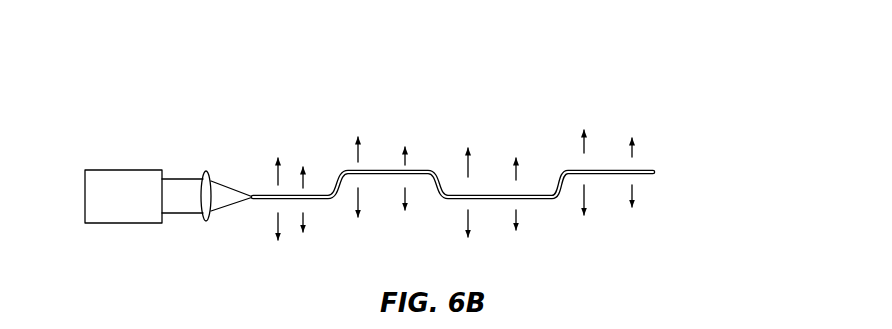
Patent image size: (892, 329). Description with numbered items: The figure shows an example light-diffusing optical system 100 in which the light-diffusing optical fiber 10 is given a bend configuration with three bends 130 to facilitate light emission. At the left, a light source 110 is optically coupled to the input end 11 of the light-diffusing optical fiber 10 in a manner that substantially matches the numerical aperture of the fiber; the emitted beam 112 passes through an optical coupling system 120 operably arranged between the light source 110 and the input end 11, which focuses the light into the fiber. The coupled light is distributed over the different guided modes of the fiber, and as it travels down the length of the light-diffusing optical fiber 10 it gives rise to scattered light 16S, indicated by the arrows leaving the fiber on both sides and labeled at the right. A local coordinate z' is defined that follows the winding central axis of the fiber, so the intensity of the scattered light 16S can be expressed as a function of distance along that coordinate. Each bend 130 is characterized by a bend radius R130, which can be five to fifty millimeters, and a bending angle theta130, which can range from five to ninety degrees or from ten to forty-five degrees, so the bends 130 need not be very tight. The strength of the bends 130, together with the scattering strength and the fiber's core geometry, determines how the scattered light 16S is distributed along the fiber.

The light-diffusing optical system 100 is at (135, 102).
The light source 110 is at (138, 205).
The laser beam 112 is at (180, 216).
The optical coupling system 120 is at (206, 171).
The light-diffusing optical fiber 10 is at (270, 203).
The input end 11 is at (252, 192).
The bend 130 is at (335, 178).
The bend radius R130 is at (343, 180).
The bending angle theta130 is at (421, 178).
The local coordinate z' z is at (541, 207).
The scattered light 16S is at (658, 148).